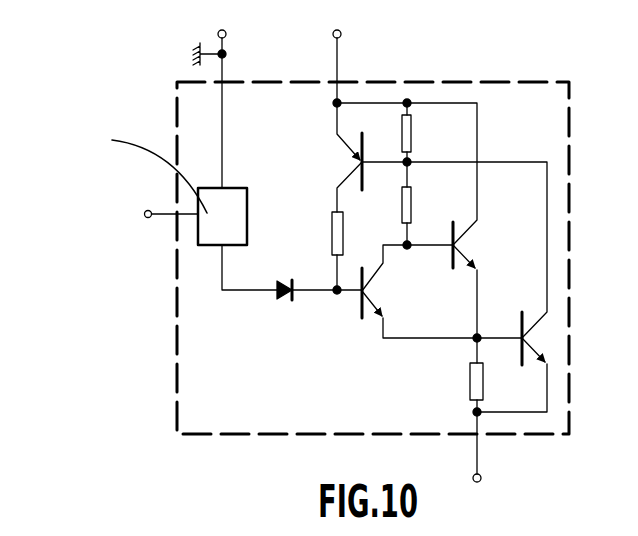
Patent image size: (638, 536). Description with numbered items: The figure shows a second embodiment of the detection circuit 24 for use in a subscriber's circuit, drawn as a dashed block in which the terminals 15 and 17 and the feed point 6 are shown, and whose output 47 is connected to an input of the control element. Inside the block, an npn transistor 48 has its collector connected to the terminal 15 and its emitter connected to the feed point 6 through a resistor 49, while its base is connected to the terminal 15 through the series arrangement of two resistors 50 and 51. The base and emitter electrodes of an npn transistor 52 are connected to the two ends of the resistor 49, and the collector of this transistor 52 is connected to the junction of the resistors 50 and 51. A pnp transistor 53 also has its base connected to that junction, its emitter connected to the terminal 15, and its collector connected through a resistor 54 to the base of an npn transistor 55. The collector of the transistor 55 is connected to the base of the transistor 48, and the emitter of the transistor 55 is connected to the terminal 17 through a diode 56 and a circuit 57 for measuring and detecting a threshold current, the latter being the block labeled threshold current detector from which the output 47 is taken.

The feed point 6 is at (486, 447).
The terminal 15 is at (365, 52).
The terminal 17 is at (215, 95).
The detection circuit 24 is at (571, 278).
The output 47 is at (165, 200).
The npn transistor 48 is at (457, 245).
The resistor 49 is at (468, 380).
The resistor 50 is at (413, 205).
The resistor 51 is at (413, 133).
The npn transistor 52 is at (520, 362).
The pnp transistor 53 is at (361, 162).
The resistor 54 is at (331, 236).
The npn transistor 55 is at (407, 303).
The diode 56 is at (283, 302).
The circuit for measuring and detecting a threshold current 57 is at (250, 184).